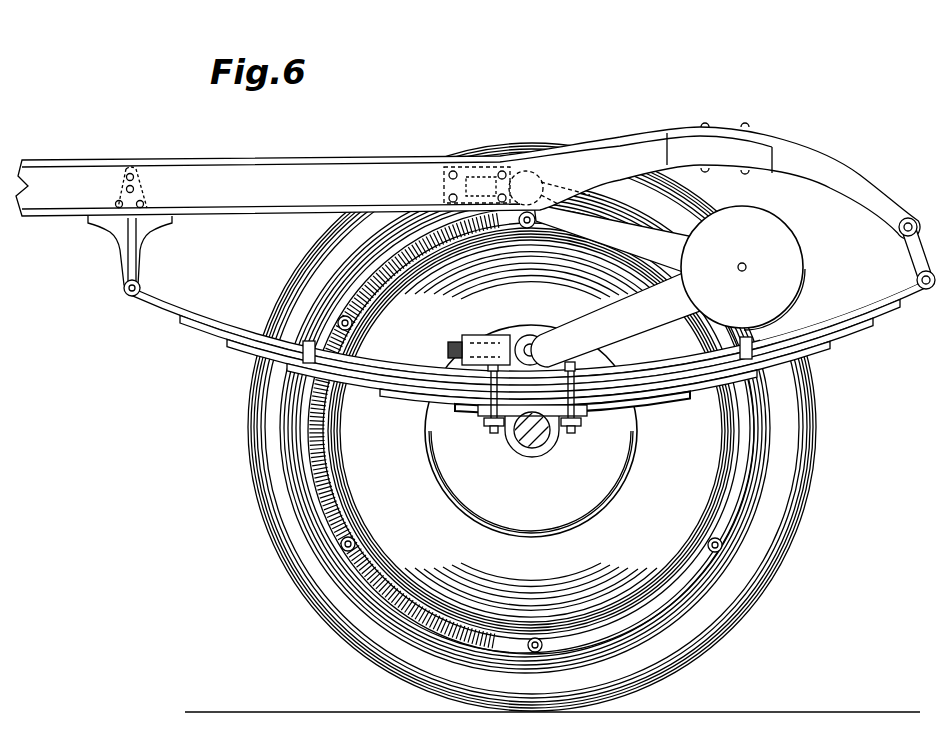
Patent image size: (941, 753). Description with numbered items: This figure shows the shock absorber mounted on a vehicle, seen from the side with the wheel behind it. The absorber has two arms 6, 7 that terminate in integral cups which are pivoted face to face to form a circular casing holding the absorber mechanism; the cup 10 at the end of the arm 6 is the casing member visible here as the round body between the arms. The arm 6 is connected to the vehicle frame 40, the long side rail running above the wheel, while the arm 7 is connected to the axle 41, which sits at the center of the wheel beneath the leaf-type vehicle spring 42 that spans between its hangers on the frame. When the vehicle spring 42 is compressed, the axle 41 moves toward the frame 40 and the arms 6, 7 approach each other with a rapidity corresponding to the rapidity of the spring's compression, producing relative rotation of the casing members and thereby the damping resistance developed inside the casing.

The vehicle frame 40 is at (468, 209).
The arm 6 is at (611, 238).
The arm 7 is at (615, 319).
The cup 10 is at (743, 268).
The axle 41 is at (548, 446).
The vehicle spring 42 is at (836, 321).